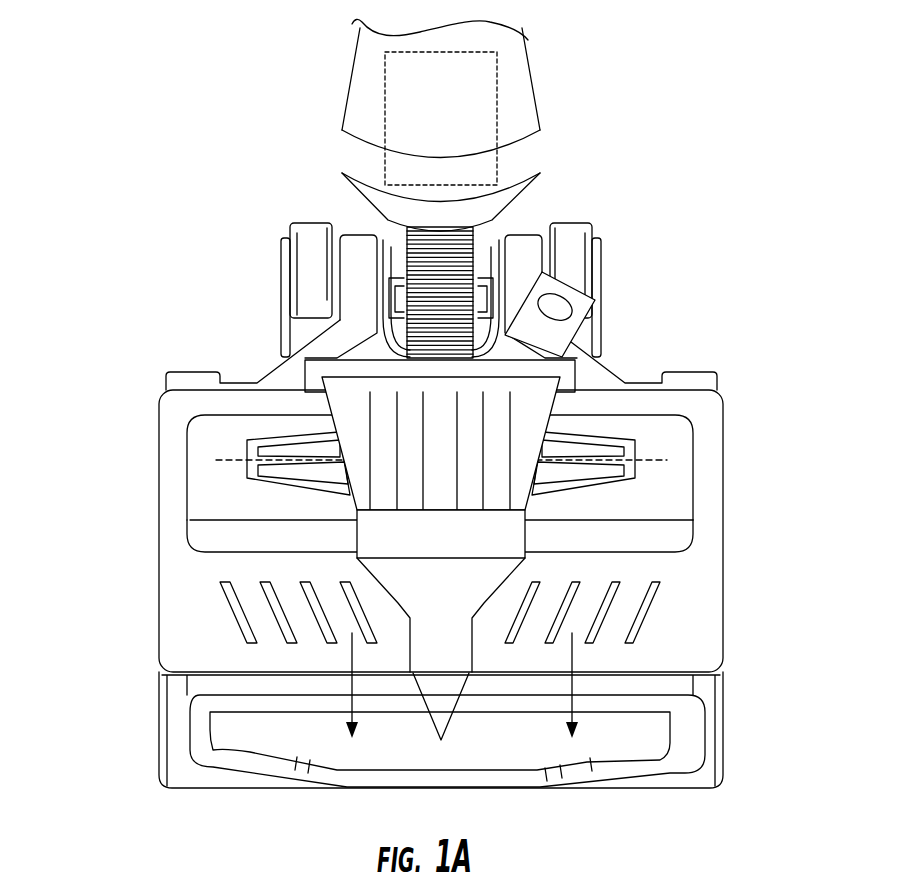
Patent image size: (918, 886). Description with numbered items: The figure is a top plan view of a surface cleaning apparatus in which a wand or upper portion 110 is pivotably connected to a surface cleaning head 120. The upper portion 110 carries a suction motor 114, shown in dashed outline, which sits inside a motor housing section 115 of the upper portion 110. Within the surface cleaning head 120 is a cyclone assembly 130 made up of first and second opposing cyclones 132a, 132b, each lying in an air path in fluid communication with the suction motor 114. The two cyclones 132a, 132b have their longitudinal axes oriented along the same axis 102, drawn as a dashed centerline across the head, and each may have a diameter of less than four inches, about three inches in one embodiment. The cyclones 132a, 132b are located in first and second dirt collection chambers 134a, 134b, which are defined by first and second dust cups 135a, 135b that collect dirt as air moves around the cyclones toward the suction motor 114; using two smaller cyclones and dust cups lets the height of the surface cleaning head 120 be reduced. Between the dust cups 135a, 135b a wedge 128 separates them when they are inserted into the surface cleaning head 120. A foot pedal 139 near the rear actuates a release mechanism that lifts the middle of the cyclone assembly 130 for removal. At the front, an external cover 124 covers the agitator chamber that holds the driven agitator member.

The upper portion 110 is at (558, 68).
The suction motor 114 is at (383, 77).
The motor housing section 115 is at (335, 157).
The surface cleaning head 120 is at (92, 376).
The cyclone assembly 130 is at (133, 489).
The axis 102 is at (227, 457).
The first dirt collection chamber 134a is at (207, 445).
The second dirt collection chamber 134b is at (670, 443).
The first dust cup 135a is at (210, 532).
The second dust cup 135b is at (680, 507).
The first cyclone 132a is at (307, 483).
The second cyclone 132b is at (592, 483).
The wedge 128 is at (518, 500).
The foot pedal 139 is at (580, 308).
The external cover 124 is at (697, 703).